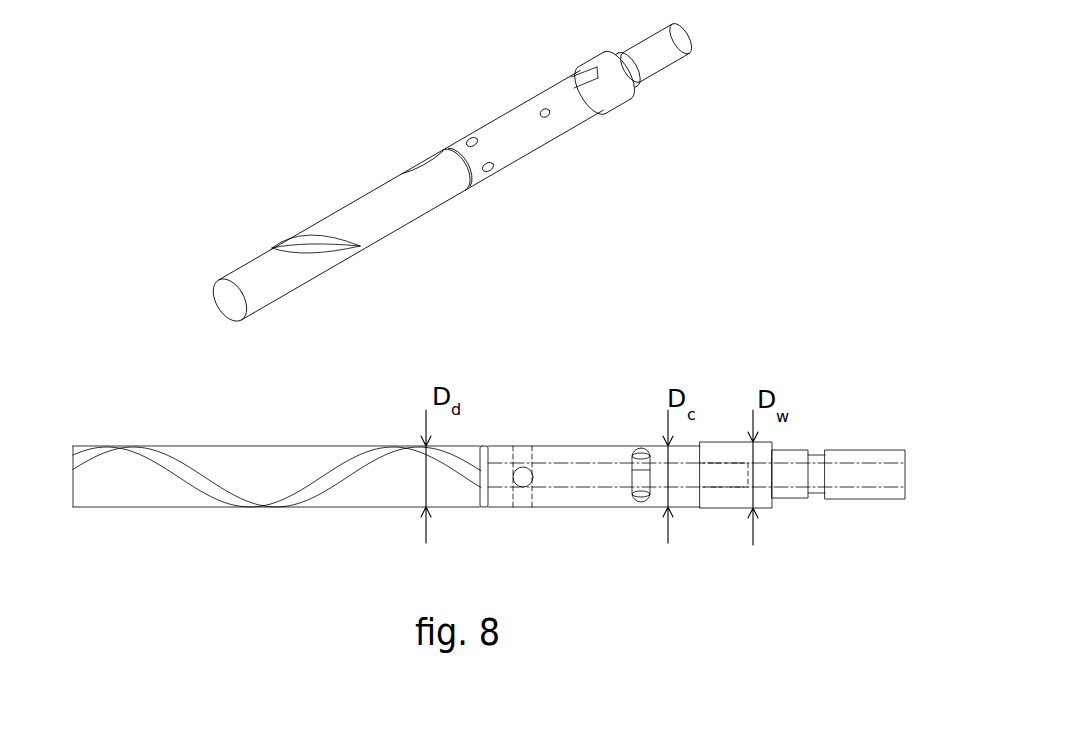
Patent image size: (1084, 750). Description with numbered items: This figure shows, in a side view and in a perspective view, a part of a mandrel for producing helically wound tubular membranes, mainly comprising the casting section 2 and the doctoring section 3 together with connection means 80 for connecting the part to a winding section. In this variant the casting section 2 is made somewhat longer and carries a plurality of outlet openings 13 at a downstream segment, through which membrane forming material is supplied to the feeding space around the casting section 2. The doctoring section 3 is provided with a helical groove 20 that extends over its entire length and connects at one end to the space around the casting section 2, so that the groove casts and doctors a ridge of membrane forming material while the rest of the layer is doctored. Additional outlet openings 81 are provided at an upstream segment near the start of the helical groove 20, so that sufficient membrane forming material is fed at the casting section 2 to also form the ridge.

The casting section 2 is at (535, 83).
The doctoring section 3 is at (335, 198).
The outlet openings 13 is at (548, 118).
The helical groove 20 is at (335, 250).
The connection means 80 is at (683, 68).
The additional outlet openings 81 is at (492, 160).